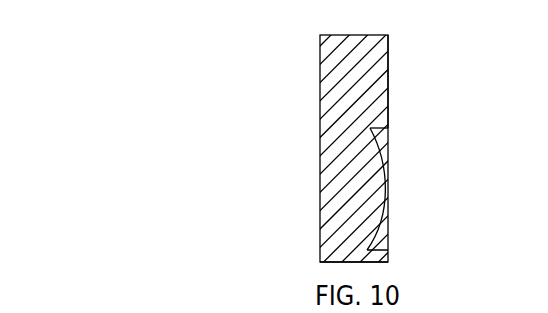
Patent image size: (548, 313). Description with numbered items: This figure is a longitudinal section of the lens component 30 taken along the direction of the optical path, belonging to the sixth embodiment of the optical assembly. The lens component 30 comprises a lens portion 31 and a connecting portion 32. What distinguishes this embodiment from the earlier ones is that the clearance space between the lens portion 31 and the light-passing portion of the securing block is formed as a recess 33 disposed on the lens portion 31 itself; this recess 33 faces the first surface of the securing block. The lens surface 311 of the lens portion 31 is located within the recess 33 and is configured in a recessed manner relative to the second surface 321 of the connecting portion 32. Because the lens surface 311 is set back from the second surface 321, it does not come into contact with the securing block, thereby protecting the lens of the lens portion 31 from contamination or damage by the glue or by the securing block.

The lens component 30 is at (50, 43).
The lens portion 31 is at (320, 240).
The lens surface 311 is at (378, 226).
The connecting portion 32 is at (320, 68).
The second surface 321 is at (388, 60).
The recess 33 is at (387, 137).